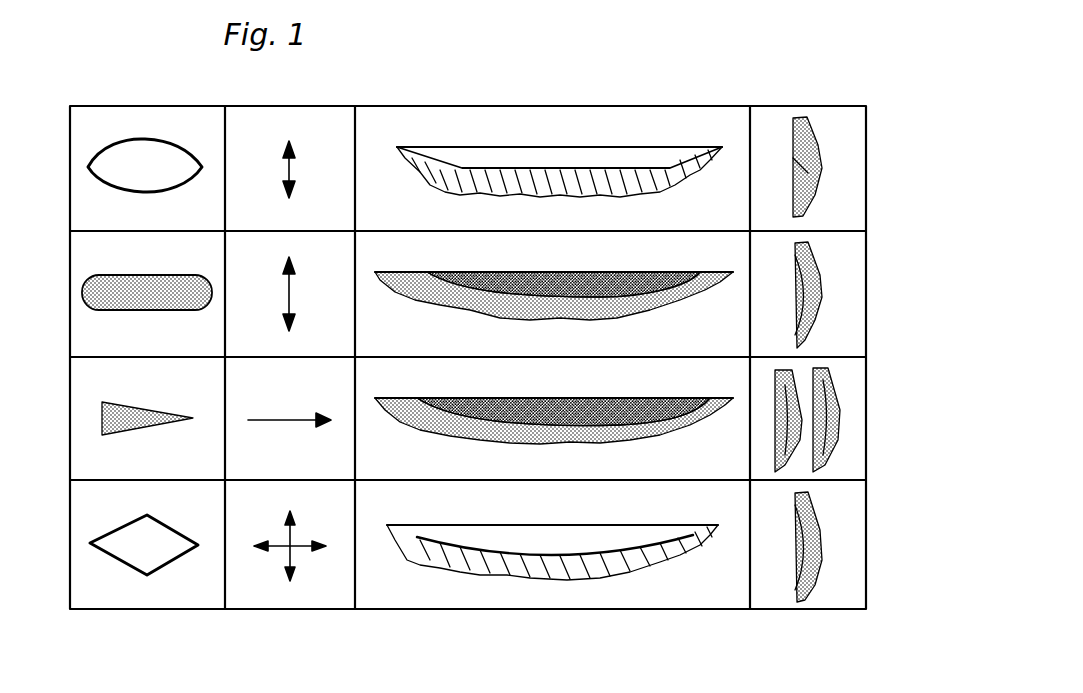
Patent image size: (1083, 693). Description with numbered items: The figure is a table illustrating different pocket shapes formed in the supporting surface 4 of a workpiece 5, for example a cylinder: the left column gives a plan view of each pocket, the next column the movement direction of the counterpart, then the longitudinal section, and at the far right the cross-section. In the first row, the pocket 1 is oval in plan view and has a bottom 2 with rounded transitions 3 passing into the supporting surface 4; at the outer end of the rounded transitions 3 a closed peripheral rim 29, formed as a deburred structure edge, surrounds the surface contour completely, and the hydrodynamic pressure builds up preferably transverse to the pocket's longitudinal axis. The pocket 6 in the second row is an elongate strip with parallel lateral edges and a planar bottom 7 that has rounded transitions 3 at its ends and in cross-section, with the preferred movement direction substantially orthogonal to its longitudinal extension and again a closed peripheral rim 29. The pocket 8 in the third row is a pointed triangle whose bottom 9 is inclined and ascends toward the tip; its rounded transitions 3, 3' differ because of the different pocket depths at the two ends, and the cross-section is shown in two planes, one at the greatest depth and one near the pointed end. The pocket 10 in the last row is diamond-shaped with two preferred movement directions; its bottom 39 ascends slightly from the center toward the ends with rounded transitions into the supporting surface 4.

The pocket 1 is at (135, 128).
The bottom 2 is at (525, 172).
The rounded transitions 3 is at (657, 352).
The rounded transition 3' is at (711, 375).
The supporting surface 4 is at (713, 147).
The workpiece 5 is at (596, 183).
The pocket 6 is at (85, 325).
The planar bottom 7 is at (570, 300).
The pocket 8 is at (88, 446).
The bottom 9 is at (523, 420).
The pocket 10 is at (113, 585).
The closed peripheral rim 29 is at (165, 137).
The bottom 39 is at (582, 553).